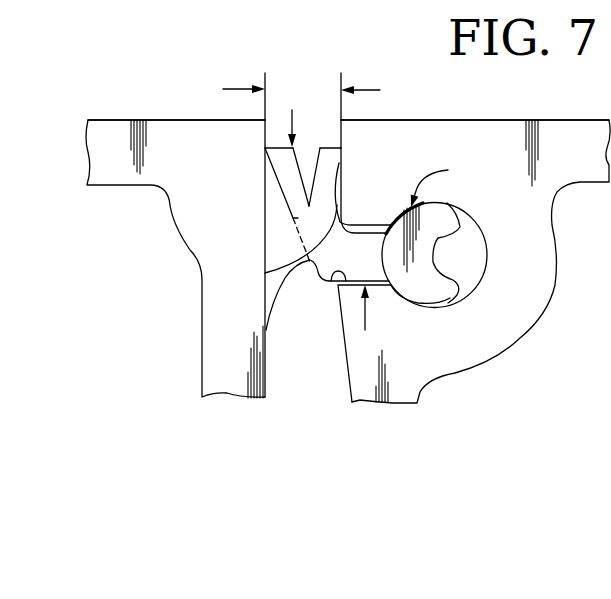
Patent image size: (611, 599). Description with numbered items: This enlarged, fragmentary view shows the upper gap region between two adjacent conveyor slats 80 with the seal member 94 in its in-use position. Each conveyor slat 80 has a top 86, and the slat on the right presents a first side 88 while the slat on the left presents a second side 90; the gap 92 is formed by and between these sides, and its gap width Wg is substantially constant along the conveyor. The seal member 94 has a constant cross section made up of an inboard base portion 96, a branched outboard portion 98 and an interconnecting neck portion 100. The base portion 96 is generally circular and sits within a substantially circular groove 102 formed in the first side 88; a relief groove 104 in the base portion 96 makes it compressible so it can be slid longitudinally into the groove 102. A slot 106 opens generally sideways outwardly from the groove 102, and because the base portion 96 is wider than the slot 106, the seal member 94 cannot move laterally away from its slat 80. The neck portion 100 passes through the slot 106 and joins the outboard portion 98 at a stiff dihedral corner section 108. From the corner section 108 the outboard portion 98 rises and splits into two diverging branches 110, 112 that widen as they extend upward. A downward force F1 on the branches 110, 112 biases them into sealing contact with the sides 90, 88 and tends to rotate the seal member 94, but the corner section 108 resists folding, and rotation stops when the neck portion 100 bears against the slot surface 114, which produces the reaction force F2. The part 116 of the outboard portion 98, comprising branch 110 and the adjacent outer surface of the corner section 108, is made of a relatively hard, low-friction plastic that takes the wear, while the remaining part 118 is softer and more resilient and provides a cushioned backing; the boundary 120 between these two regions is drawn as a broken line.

The conveyor slat 80 is at (117, 128).
The top 86 is at (177, 117).
The first side 88 is at (350, 402).
The second side 90 is at (262, 400).
The gap 92 is at (327, 135).
The seal member 94 is at (310, 292).
The base portion 96 is at (449, 297).
The outboard portion 98 is at (282, 198).
The neck portion 100 is at (375, 270).
The groove 102 is at (487, 249).
The relief groove 104 is at (470, 266).
The slot 106 is at (268, 271).
The dihedral corner section 108 is at (273, 300).
The branch 110 is at (262, 162).
The branch 112 is at (340, 158).
The slot surface 114 is at (326, 283).
The relatively hard region 116 is at (283, 170).
The remaining region 118 is at (330, 217).
The boundary 120 is at (310, 206).
The downward force F1 is at (264, 121).
The reaction force F2 is at (364, 326).
The gap width Wg is at (301, 110).